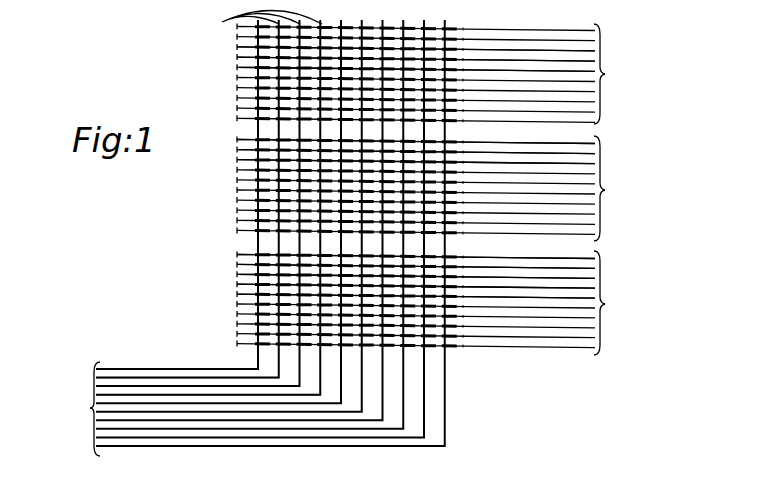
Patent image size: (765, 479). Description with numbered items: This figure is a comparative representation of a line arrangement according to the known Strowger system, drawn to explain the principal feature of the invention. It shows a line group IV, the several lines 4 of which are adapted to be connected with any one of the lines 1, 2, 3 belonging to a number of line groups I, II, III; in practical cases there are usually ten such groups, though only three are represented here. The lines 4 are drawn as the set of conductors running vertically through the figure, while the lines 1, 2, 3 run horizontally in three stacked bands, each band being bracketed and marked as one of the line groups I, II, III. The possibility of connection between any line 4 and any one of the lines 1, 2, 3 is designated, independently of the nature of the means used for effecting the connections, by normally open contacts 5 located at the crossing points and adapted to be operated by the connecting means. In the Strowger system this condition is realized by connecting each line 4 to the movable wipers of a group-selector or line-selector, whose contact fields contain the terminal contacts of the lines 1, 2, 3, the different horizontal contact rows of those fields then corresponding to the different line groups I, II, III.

The lines 1 is at (587, 302).
The lines 2 is at (582, 162).
The lines 3 is at (573, 70).
The lines 4 is at (180, 372).
The normally open contacts 5 is at (258, 57).
The line group I is at (434, 299).
The line group II is at (433, 184).
The line group III is at (432, 66).
The line group IV is at (190, 397).